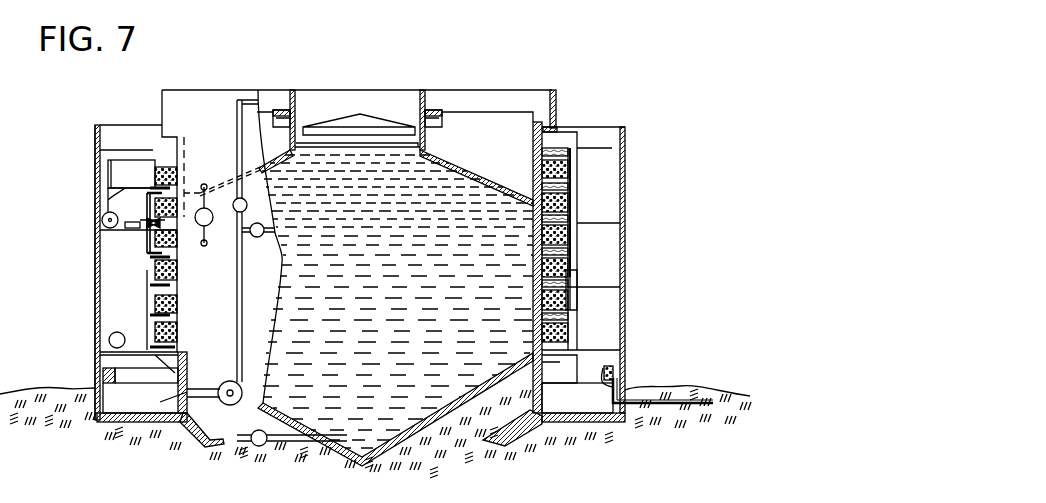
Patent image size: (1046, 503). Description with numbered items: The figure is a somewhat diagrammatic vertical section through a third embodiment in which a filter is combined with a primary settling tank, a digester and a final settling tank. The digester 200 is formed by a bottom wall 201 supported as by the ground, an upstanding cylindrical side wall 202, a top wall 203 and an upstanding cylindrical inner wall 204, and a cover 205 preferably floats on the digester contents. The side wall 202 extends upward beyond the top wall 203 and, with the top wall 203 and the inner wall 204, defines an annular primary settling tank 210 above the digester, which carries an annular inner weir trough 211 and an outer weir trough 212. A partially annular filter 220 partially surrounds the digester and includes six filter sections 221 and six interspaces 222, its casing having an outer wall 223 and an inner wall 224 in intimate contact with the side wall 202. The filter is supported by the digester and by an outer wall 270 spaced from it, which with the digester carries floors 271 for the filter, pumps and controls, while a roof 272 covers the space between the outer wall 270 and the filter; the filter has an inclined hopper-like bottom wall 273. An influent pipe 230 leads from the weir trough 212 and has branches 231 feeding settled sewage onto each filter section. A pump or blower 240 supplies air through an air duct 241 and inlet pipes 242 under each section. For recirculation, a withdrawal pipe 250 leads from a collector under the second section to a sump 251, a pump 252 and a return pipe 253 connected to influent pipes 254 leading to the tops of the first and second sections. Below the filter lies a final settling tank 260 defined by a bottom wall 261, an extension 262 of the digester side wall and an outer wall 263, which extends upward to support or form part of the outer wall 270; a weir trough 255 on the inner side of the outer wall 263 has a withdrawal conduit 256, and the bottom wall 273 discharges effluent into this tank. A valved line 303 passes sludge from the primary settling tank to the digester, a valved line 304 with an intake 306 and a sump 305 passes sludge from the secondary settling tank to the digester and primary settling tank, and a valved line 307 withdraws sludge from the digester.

The digester 200 is at (460, 407).
The bottom wall 201 is at (422, 420).
The side wall 202 is at (542, 298).
The top wall 203 is at (445, 163).
The inner wall 204 is at (425, 92).
The cover 205 is at (375, 137).
The tank 210 is at (557, 105).
The inner weir trough 211 is at (443, 120).
The outer weir trough 212 is at (533, 122).
The filter 220 is at (577, 273).
The filter sections 221 is at (547, 203).
The interspaces 222 is at (547, 218).
The outer wall 223 is at (568, 332).
The inner wall 224 is at (542, 250).
The influent pipe 230 is at (577, 140).
The branches 231 is at (572, 170).
The pump or blower 240 is at (110, 338).
The air duct 241 is at (147, 330).
The inlet pipes 242 is at (153, 290).
The withdrawal pipe 250 is at (147, 245).
The sump 251 is at (140, 230).
The pump 252 is at (103, 224).
The return pipe 253 is at (108, 173).
The influent pipes 254 is at (108, 197).
The weir trough 255 is at (107, 373).
The withdrawal conduit 256 is at (690, 403).
The final settling tank 260 is at (593, 420).
The bottom wall 261 is at (137, 424).
The extension 262 is at (542, 395).
The outer wall 263 is at (100, 414).
The outer wall 270 is at (625, 322).
The floors 271 is at (598, 225).
The roof 272 is at (133, 150).
The bottom wall 273 is at (547, 366).
The valved line 303 is at (217, 238).
The valved line 304 is at (237, 293).
The sump 305 is at (220, 410).
The intake 306 is at (203, 393).
The valved line 307 is at (312, 444).